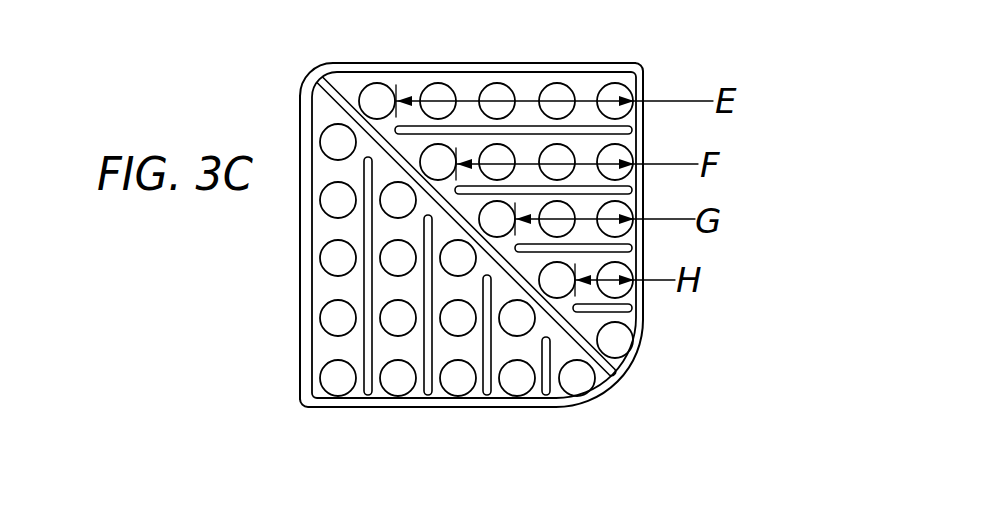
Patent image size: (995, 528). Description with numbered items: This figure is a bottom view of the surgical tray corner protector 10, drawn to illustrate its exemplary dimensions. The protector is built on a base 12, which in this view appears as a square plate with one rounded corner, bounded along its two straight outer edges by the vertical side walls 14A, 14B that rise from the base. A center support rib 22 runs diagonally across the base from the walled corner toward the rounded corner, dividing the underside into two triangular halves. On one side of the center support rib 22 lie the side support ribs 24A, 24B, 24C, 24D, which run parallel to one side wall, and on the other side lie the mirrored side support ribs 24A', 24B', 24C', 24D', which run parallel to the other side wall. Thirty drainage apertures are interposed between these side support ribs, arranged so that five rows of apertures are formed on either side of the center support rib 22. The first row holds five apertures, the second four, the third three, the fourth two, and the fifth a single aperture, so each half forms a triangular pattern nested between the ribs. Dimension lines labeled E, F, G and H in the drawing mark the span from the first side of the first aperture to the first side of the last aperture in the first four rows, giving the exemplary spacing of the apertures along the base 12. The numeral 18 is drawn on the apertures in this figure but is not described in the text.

The surgical tray corner protector 10 is at (787, 104).
The base 12 is at (690, 355).
The vertical side wall 14A is at (433, 63).
The vertical side wall 14B is at (300, 332).
The holes 18 is at (402, 392).
The center support rib 22 is at (614, 376).
The side support rib 24A is at (399, 324).
The side support rib 24B is at (458, 348).
The side support rib 24C is at (512, 379).
The side support rib 24D is at (569, 410).
The side support rib 24A' is at (551, 97).
The side support rib 24B' is at (579, 160).
The side support rib 24C' is at (605, 219).
The side support rib 24D' is at (636, 276).